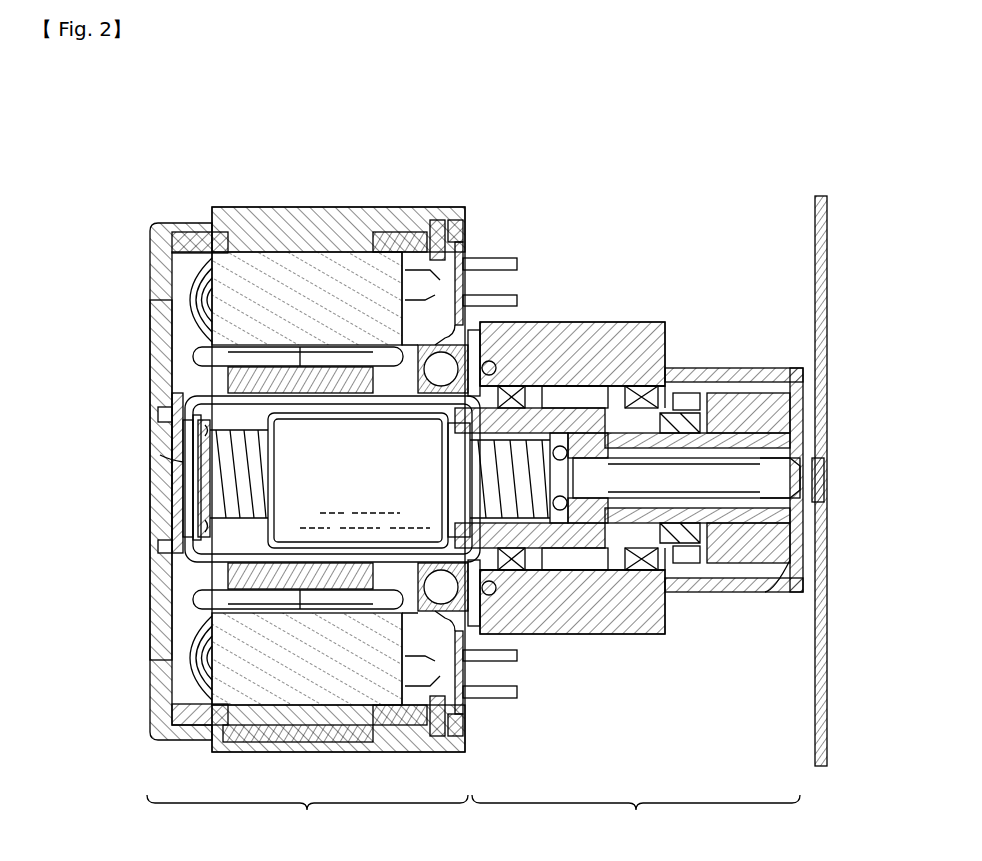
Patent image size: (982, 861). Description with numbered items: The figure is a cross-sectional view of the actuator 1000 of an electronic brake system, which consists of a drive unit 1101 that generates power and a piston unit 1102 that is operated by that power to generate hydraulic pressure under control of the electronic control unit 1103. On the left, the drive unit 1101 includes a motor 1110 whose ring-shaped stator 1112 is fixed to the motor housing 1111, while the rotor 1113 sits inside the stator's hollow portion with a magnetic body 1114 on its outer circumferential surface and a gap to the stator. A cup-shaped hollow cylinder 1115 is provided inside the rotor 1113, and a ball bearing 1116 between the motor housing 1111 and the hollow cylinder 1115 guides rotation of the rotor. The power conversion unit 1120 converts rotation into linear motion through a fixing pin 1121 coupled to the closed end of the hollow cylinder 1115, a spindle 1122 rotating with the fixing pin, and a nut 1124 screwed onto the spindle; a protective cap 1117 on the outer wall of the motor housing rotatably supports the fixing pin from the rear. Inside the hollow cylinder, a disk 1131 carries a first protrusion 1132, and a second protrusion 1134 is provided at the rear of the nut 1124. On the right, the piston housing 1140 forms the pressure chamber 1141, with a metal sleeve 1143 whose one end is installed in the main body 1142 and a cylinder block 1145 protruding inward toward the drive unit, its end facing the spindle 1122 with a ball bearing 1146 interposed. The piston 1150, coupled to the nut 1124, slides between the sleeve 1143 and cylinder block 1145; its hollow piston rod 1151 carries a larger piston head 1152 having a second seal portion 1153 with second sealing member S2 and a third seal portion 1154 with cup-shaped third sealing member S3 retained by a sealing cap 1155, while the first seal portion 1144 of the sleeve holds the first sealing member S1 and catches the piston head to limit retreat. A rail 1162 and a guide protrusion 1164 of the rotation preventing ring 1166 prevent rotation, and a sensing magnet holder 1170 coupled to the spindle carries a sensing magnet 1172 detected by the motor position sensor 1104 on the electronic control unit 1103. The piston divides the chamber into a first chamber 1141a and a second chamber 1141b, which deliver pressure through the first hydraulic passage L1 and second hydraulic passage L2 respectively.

The actuator 1000 is at (654, 125).
The drive unit 1101 is at (307, 816).
The piston unit 1102 is at (636, 816).
The electronic control unit 1103 is at (829, 240).
The motor position sensor 1104 is at (825, 480).
The motor 1110 is at (148, 256).
The motor housing 1111 is at (156, 226).
The stator 1112 is at (292, 266).
The rotor 1113 is at (198, 374).
The magnetic body 1114 is at (228, 370).
The hollow cylinder 1115 is at (172, 400).
The ball bearing 1116 is at (468, 330).
The protective cap 1117 is at (160, 458).
The power conversion unit 1120 is at (188, 552).
The fixing pin 1121 is at (193, 505).
The spindle 1122 is at (198, 524).
The nut 1124 is at (205, 490).
The disk 1131 is at (183, 450).
The first protrusion 1132 is at (185, 436).
The second protrusion 1134 is at (270, 424).
The piston housing 1140 is at (673, 354).
The pressure chamber 1141 is at (733, 405).
The first chamber 1141a is at (770, 585).
The second chamber 1141b is at (452, 432).
The main body 1142 is at (598, 396).
The sleeve 1143 is at (648, 450).
The first seal portion 1144 is at (497, 600).
The cylinder block 1145 is at (750, 445).
The ball bearing 1146 is at (578, 382).
The piston 1150 is at (605, 432).
The piston rod 1151 is at (550, 440).
The piston head 1152 is at (585, 575).
The second seal portion 1153 is at (668, 580).
The third seal portion 1154 is at (690, 575).
The sealing cap 1155 is at (705, 570).
The rail 1162 is at (448, 522).
The guide protrusion 1164 is at (734, 496).
The rotation preventing ring 1166 is at (590, 522).
The sensing magnet holder 1170 is at (780, 533).
The sensing magnet 1172 is at (806, 452).
The first sealing member S1 is at (540, 580).
The second sealing member S2 is at (642, 570).
The third sealing member S3 is at (683, 570).
The first hydraulic passage L1 is at (770, 570).
The second hydraulic passage L2 is at (587, 570).